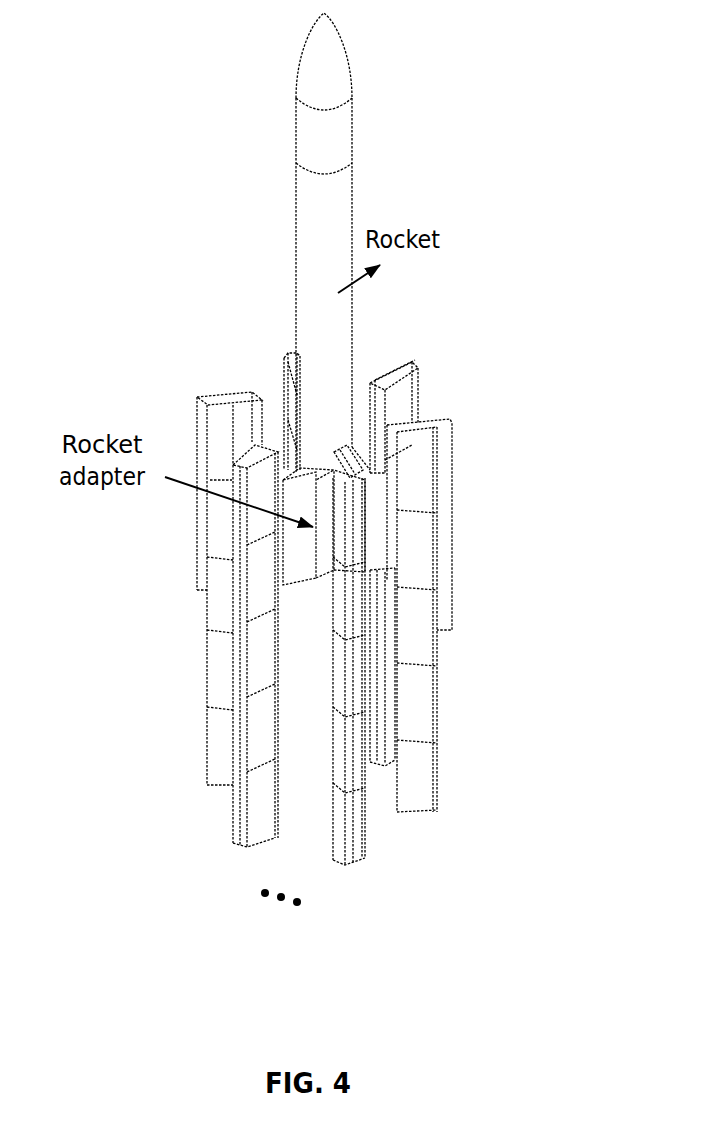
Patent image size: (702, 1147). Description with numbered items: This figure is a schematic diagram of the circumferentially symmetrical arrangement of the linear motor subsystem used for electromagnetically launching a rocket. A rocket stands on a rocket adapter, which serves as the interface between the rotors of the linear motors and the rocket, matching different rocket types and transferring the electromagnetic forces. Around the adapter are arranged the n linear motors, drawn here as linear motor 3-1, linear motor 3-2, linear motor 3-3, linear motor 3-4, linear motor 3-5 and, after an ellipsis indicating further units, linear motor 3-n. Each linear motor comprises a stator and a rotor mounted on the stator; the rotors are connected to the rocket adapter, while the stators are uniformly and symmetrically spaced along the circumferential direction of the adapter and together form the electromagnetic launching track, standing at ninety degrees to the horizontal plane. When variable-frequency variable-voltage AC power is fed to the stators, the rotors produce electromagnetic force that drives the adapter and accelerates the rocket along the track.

The linear motor 3-1 is at (452, 645).
The linear motor 3-2 is at (428, 398).
The linear motor 3-3 is at (270, 357).
The linear motor 3-4 is at (185, 592).
The linear motor 3-5 is at (223, 820).
The linear motor 3-n is at (373, 865).